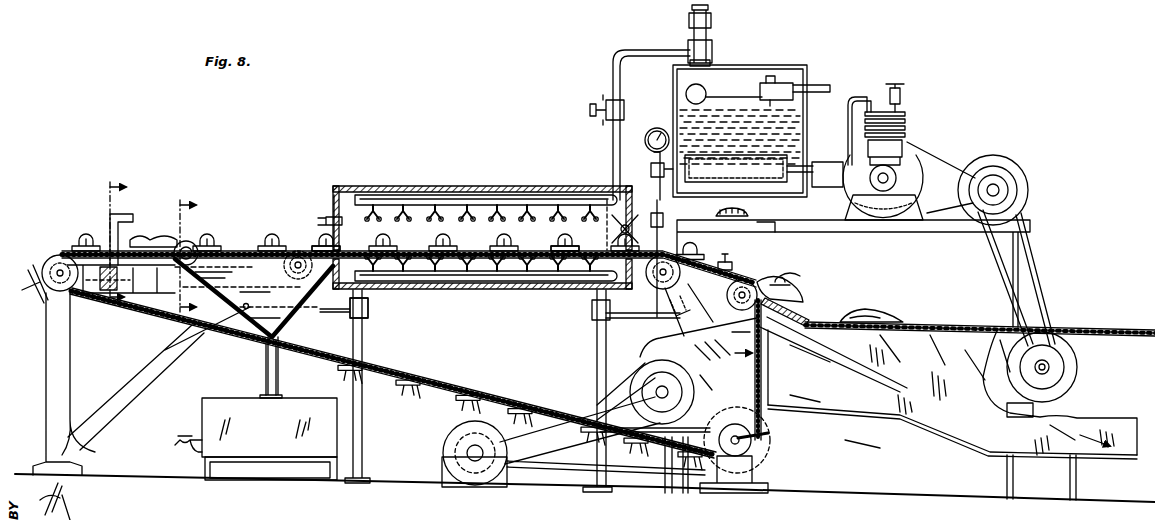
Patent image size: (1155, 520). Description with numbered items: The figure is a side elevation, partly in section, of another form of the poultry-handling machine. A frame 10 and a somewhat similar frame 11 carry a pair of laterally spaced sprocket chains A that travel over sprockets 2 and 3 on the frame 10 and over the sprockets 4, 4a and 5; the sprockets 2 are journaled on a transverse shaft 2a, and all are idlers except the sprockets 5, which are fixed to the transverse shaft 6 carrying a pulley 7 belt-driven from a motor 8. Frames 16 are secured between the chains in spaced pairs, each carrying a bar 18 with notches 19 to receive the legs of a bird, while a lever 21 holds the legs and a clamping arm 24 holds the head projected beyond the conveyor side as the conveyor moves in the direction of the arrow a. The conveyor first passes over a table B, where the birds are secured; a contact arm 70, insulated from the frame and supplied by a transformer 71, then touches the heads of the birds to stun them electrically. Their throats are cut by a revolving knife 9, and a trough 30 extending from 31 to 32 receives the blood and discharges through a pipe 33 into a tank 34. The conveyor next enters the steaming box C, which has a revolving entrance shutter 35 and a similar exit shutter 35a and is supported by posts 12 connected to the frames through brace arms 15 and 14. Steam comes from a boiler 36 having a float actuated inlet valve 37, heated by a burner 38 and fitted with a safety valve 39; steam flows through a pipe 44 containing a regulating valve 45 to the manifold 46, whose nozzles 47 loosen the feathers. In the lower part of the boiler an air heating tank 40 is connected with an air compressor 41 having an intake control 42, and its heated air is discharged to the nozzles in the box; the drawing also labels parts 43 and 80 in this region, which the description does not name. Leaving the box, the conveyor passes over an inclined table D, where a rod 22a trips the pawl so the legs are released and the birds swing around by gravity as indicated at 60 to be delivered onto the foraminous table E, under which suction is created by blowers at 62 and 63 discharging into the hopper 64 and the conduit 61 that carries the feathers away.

The transverse shaft 2a is at (50, 262).
The sprocket 2 is at (45, 305).
The transformer 71 is at (118, 300).
The contact arm 70 is at (168, 232).
The revolving knife 9 is at (203, 243).
The frame 10 is at (179, 386).
The trough end 31 is at (190, 242).
The clamping arm 24 is at (275, 235).
The frame 16 is at (300, 247).
The revolving entrance shutter 35 is at (333, 215).
The sprocket 3 is at (289, 272).
The trough end 32 is at (282, 289).
The brace arm 15 is at (342, 314).
The trough 30 is at (300, 330).
The pipe 33 is at (265, 383).
The tank 34 is at (256, 439).
The post 12 is at (363, 448).
The brace arm 14 is at (640, 319).
The recess 19 is at (396, 388).
The lever 21 is at (410, 398).
The bar 18 is at (461, 408).
The motor 8 is at (443, 448).
The blower 62 is at (646, 368).
The sprocket 4 is at (650, 284).
The frame 11 is at (690, 304).
The swinging bird position 60 is at (797, 290).
The rod 22a is at (725, 256).
The sprocket 4a is at (812, 300).
The hopper 64 is at (934, 395).
The blower 63 is at (1078, 368).
The conduit 61 is at (1074, 440).
The sprocket 5 is at (737, 440).
The transverse shaft 6 is at (721, 439).
The pulley 7 is at (770, 434).
The burner 38 is at (750, 213).
The boiler 36 is at (735, 65).
The float actuated inlet valve 37 is at (796, 90).
The air heating tank 40 is at (764, 171).
The safety valve 39 is at (708, 37).
The pipe 44 is at (641, 43).
The regulating valve 45 is at (600, 109).
The pressure gauge 43 is at (653, 182).
The intake control 42 is at (901, 96).
The air compressor 41 is at (905, 131).
The pulley 80 is at (1012, 168).
The revolving exit shutter 35a is at (638, 214).
The manifold 46 is at (408, 197).
The nozzle 47 is at (455, 208).
The sprocket chains A is at (384, 372).
The table B is at (230, 232).
The steaming box C is at (512, 192).
The table D is at (730, 252).
The table E is at (936, 327).
The arrow a is at (252, 239).